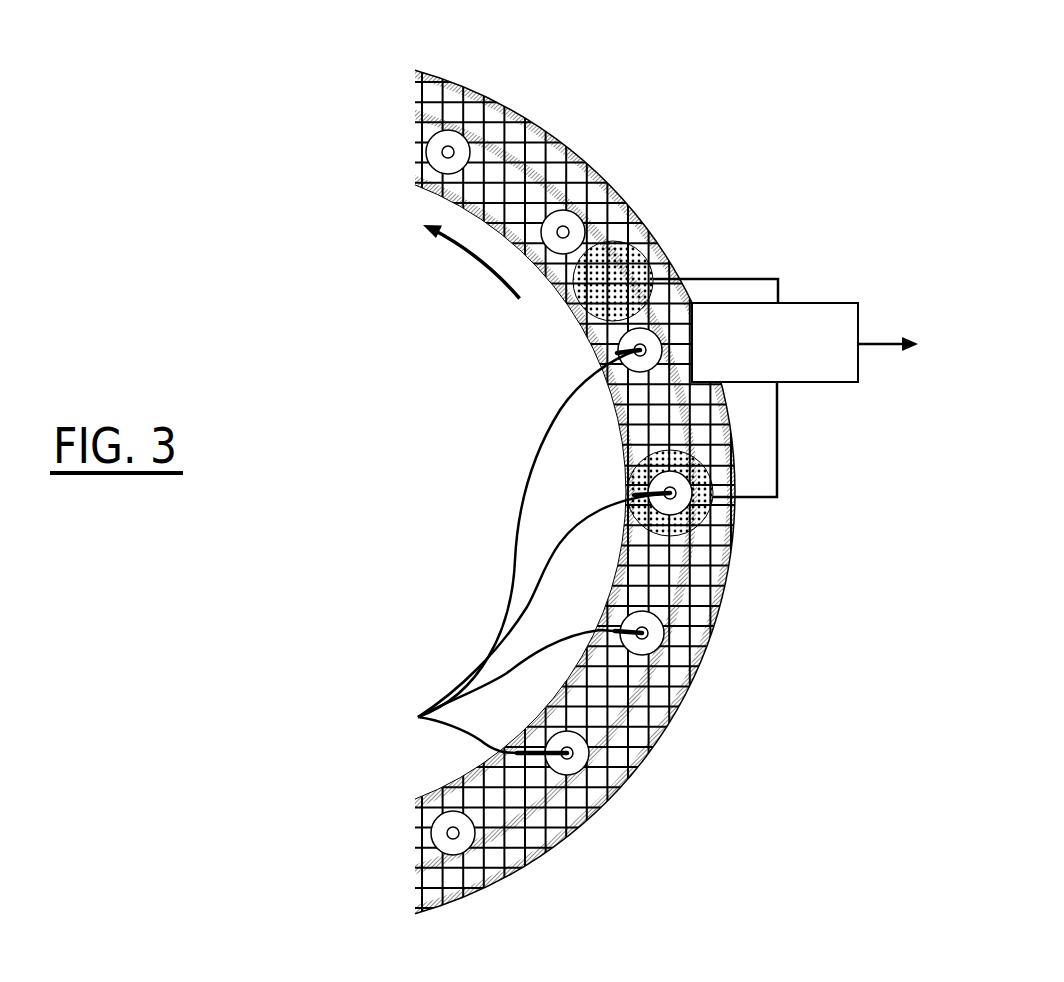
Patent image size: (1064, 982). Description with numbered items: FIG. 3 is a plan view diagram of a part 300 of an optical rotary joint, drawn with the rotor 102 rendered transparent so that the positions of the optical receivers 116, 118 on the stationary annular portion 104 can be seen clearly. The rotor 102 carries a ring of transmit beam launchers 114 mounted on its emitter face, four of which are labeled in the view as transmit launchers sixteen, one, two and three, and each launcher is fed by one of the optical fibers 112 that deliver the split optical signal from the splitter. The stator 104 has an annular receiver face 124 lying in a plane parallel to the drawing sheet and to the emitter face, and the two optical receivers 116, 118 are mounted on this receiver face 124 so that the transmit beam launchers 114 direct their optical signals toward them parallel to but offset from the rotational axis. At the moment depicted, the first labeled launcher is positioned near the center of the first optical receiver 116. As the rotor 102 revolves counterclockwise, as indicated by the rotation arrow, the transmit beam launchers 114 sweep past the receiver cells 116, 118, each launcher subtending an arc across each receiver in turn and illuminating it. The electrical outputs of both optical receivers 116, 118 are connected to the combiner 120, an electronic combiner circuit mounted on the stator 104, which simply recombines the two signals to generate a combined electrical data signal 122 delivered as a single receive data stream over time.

The part of the rotary joint 300 is at (901, 96).
The stationary annular portion 104 is at (455, 88).
The receiver face 124 is at (523, 140).
The rotor 102 is at (422, 185).
The transmit beam launchers 114 is at (573, 223).
The optical receiver 118 is at (645, 244).
The optical receiver 116 is at (709, 532).
The optical fibers 112 is at (418, 717).
The combiner 120 is at (845, 302).
The combined electrical data signal 122 is at (877, 333).